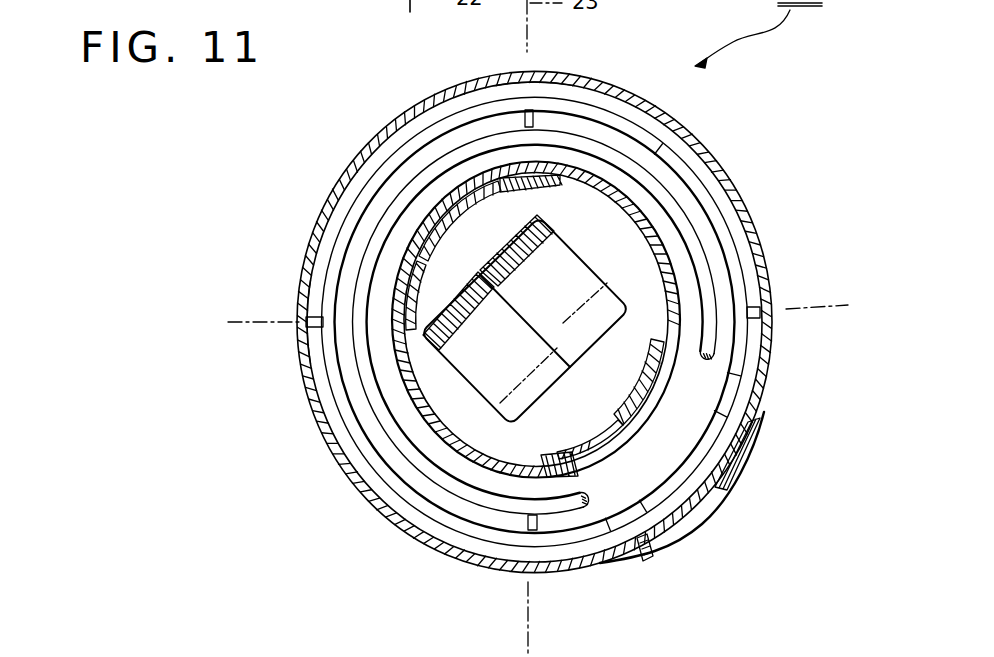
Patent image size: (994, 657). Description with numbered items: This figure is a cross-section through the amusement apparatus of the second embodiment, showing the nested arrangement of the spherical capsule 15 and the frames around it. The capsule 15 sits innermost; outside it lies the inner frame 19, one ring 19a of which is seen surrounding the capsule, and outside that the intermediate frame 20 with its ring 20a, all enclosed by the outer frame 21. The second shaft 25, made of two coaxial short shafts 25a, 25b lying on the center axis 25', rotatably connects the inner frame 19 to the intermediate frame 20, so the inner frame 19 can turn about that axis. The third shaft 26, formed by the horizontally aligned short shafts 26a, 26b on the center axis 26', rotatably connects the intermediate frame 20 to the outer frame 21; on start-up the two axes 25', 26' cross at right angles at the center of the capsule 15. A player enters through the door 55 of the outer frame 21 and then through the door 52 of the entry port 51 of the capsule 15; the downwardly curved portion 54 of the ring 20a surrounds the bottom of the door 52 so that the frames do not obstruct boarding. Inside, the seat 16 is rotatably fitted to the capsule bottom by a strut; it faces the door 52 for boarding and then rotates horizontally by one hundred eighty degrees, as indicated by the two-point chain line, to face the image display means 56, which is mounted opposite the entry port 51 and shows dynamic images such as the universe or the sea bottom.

The capsule 15 is at (409, 385).
The seat 16 is at (573, 362).
The inner frame 19 is at (704, 240).
The ring of inner frame 19a is at (653, 195).
The intermediate frame 20 is at (702, 180).
The ring of intermediate frame 20a is at (666, 142).
The outer frame 21 is at (372, 496).
The second shaft 25 is at (489, 79).
The short shaft 25a is at (553, 100).
The short shaft 25b is at (520, 525).
The center axis of second shaft 25' is at (567, 328).
The third shaft 26 is at (293, 271).
The short shaft 26a is at (308, 336).
The short shaft 26b is at (760, 330).
The center axis of third shaft 26' is at (538, 282).
The entry port 51 is at (563, 450).
The door 52 is at (604, 425).
The curved portion 54 is at (690, 460).
The door of outer frame 55 is at (748, 470).
The image display means 56 is at (460, 226).